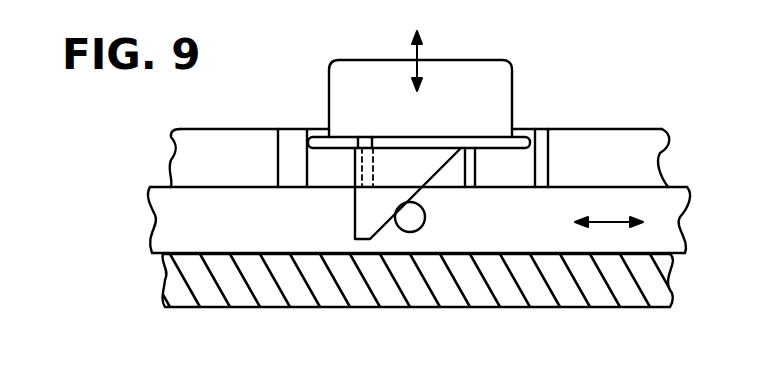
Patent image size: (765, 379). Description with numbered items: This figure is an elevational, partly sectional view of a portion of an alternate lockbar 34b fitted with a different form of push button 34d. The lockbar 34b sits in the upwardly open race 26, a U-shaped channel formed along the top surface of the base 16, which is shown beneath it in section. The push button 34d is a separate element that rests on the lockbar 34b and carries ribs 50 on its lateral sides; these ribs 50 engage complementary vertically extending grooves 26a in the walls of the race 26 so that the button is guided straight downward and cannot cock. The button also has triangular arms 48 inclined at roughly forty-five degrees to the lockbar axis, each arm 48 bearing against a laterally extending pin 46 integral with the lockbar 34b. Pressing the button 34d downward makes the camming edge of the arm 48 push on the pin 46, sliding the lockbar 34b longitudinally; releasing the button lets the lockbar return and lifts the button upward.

The race 26 is at (170, 144).
The push button 34d is at (512, 68).
The ribs 50 is at (365, 137).
The grooves 26a is at (482, 167).
The triangular arms 48 is at (353, 220).
The pins 46 is at (422, 228).
The lockbar 34b is at (165, 220).
The base 16 is at (162, 291).